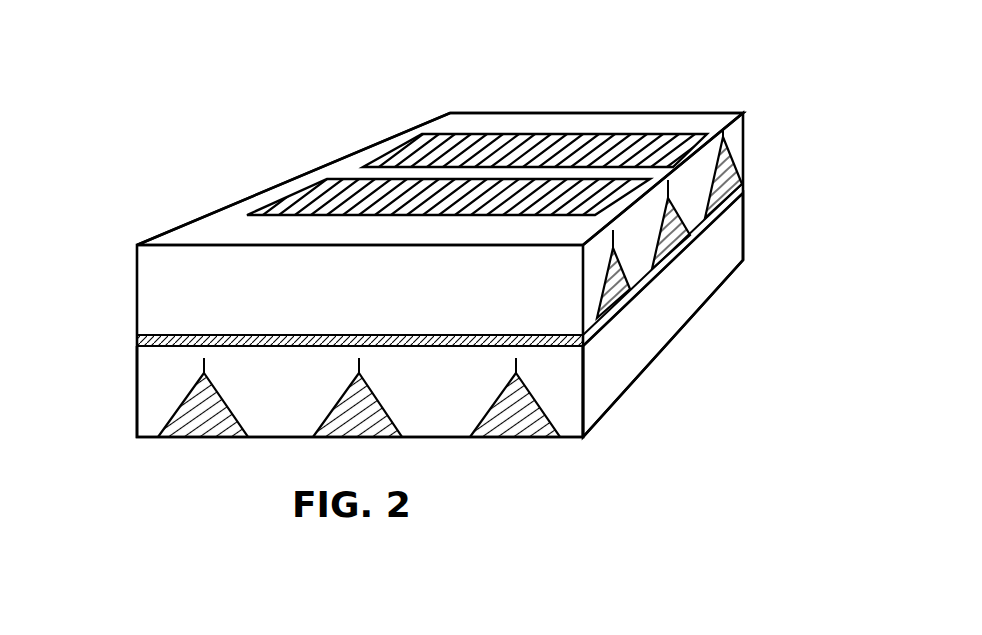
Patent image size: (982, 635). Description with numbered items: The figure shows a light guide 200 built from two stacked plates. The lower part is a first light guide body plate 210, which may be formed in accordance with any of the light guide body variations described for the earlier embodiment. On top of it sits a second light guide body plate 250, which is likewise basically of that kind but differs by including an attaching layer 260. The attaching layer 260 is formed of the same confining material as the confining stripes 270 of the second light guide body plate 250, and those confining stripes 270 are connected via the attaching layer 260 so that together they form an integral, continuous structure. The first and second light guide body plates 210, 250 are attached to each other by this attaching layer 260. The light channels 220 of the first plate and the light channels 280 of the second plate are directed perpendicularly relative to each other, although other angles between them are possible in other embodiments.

The light guide 200 is at (193, 130).
The first light guide body plate 210 is at (607, 373).
The light channels 220 is at (442, 402).
The second light guide body plate 250 is at (734, 138).
The attaching layer 260 is at (197, 335).
The confining stripes 270 is at (717, 170).
The light channels 280 is at (638, 243).